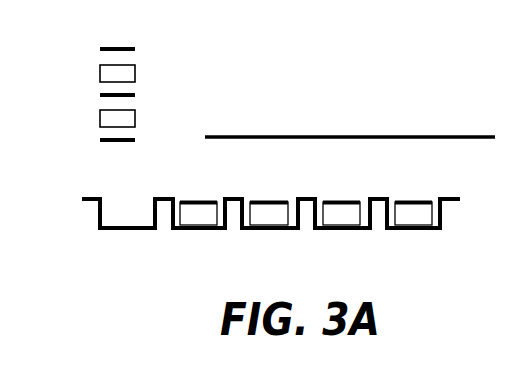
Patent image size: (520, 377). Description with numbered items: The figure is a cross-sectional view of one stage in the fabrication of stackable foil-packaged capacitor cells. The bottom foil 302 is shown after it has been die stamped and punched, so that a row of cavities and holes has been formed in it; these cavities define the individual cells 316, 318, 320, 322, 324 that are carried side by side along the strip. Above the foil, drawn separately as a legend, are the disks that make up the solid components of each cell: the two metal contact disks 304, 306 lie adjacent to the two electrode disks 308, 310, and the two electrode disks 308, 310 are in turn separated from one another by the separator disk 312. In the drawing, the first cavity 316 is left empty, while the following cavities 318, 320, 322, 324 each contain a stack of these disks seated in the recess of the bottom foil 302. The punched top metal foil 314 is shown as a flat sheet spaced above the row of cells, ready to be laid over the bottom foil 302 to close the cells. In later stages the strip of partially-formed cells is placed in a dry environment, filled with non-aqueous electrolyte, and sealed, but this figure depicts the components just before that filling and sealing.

The bottom foil 302 is at (98, 212).
The metal contact disk 304 is at (100, 48).
The metal contact disk 306 is at (100, 140).
The electrode disk 308 is at (100, 71).
The electrode disk 310 is at (100, 118).
The separator disk 312 is at (100, 95).
The punched top metal foil 314 is at (459, 135).
The individual cell 316 is at (122, 231).
The individual cell 318 is at (193, 231).
The individual cell 320 is at (270, 231).
The individual cell 322 is at (343, 231).
The individual cell 324 is at (413, 231).